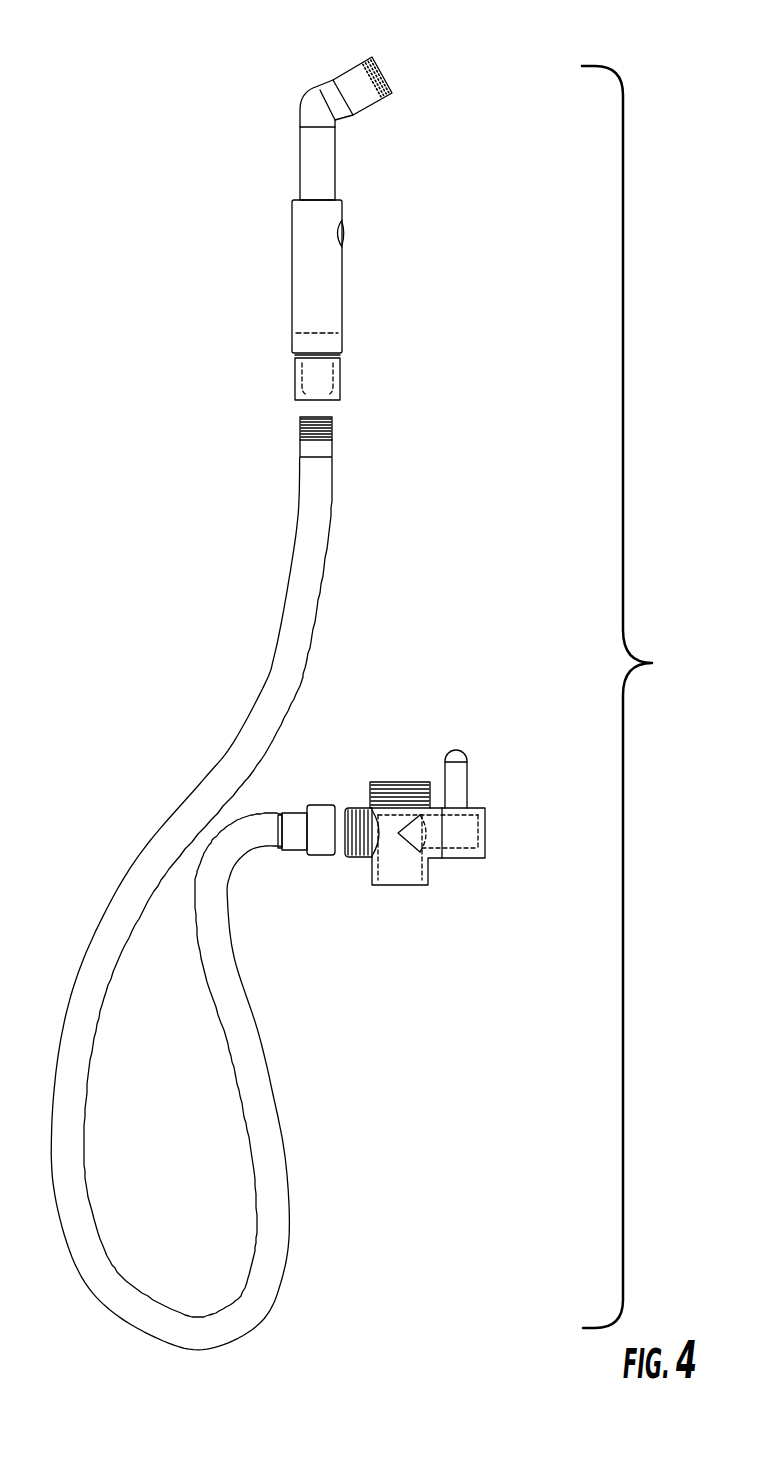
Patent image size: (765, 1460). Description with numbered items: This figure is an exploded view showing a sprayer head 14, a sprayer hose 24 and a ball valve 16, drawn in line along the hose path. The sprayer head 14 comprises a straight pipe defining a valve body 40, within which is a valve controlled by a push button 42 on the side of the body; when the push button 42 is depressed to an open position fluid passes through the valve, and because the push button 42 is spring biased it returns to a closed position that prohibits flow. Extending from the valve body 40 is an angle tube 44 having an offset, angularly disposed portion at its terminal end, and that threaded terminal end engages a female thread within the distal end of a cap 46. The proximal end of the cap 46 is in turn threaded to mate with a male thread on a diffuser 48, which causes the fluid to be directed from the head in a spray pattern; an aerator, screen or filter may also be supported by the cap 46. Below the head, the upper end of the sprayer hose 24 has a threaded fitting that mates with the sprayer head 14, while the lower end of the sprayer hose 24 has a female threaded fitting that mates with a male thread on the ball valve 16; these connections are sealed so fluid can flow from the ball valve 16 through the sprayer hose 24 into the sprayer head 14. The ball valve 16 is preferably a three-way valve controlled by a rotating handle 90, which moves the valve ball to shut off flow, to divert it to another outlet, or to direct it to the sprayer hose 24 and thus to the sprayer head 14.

The sprayer head 14 is at (359, 230).
The ball valve 16 is at (526, 834).
The sprayer hose 24 is at (428, 608).
The valve body 40 is at (292, 270).
The push button 42 is at (343, 235).
The angle tube 44 is at (298, 163).
The cap 46 is at (368, 58).
The diffuser 48 is at (383, 72).
The rotating handle 90 is at (458, 787).